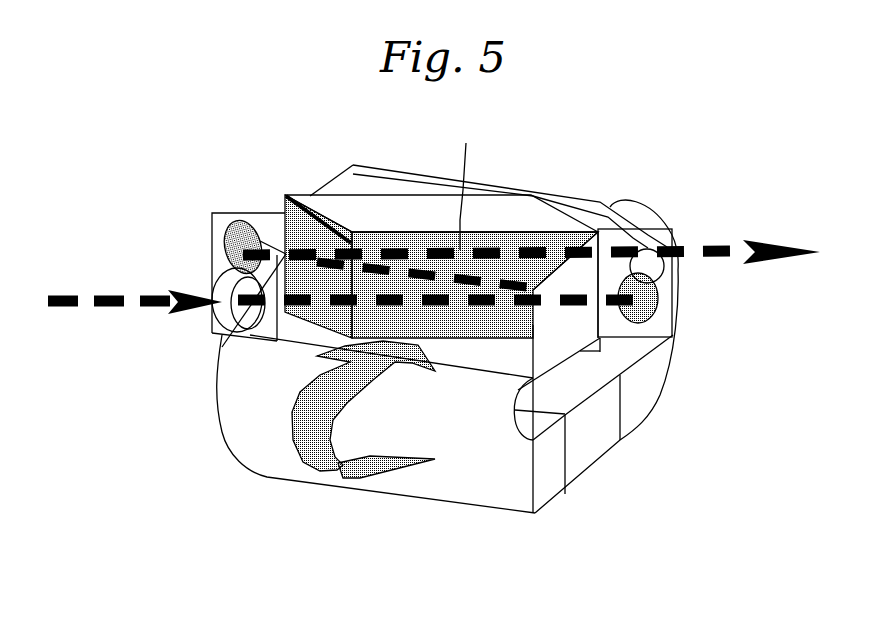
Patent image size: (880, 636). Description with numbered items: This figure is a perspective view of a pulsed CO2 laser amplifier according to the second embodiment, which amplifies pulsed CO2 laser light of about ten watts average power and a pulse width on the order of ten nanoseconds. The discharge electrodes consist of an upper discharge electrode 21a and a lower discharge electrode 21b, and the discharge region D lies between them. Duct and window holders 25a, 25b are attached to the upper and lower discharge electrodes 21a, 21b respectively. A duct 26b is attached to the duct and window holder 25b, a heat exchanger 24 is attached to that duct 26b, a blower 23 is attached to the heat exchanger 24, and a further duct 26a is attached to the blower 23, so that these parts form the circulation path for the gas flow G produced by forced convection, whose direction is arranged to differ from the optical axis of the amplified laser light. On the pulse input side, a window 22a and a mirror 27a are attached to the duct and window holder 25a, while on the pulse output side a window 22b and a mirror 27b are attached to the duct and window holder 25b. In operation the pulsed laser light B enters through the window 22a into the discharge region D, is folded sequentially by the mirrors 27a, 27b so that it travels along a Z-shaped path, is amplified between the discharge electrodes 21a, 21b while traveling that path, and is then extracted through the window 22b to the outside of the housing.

The upper discharge electrode 21a is at (270, 211).
The lower discharge electrode 21b is at (637, 343).
The window 22a is at (212, 289).
The window 22b is at (652, 220).
The blower 23 is at (552, 508).
The heat exchanger 24 is at (597, 466).
The duct and window holder 25a is at (237, 211).
The duct and window holder 25b is at (320, 192).
The duct 26a is at (467, 508).
The duct 26b is at (567, 190).
The mirror 27a is at (212, 231).
The mirror 27b is at (675, 293).
The pulsed laser light B is at (55, 294).
The discharge region D is at (468, 181).
The gas flow G is at (290, 427).